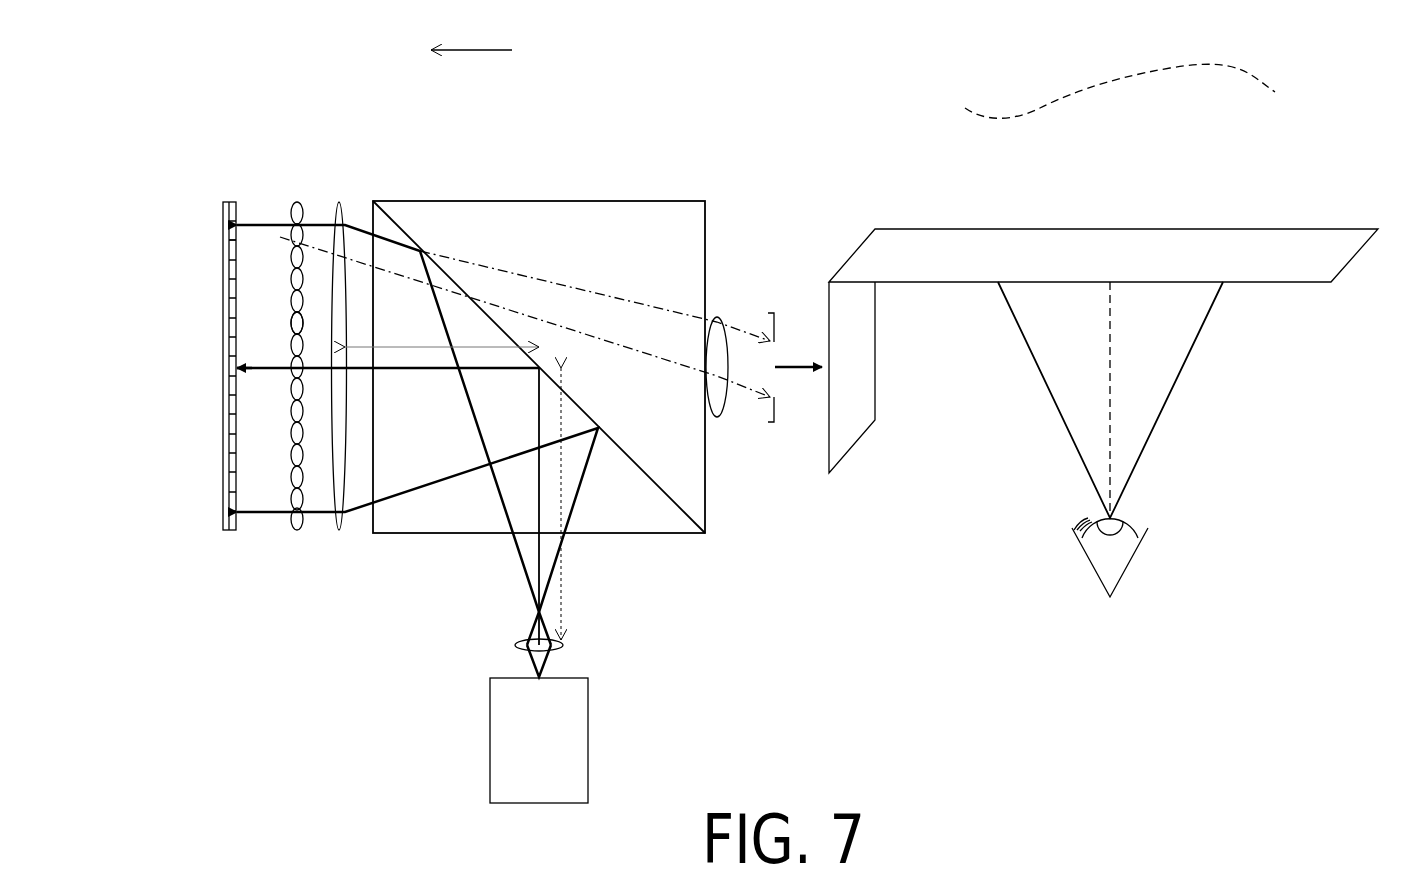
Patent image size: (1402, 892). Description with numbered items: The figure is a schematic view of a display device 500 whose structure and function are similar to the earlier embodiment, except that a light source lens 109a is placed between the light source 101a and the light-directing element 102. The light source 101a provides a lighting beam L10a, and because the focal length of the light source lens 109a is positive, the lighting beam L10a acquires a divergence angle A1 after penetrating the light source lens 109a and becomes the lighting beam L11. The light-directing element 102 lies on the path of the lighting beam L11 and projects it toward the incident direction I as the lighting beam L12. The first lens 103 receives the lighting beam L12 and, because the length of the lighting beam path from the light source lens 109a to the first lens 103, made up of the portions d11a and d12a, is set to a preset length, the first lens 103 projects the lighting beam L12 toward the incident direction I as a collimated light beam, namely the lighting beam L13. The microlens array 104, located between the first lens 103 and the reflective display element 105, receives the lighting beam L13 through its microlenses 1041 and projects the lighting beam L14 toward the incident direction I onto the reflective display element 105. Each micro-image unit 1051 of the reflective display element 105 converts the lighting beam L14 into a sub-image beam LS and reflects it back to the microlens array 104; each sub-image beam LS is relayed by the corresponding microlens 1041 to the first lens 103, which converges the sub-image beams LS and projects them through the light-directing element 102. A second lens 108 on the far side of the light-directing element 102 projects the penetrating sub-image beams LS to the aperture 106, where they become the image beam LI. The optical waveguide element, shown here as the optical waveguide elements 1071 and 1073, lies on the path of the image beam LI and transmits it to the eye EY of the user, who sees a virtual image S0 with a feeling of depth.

The incident direction I is at (471, 26).
The reflective display element 105 is at (221, 211).
The micro-image unit 1051 is at (230, 252).
The sub-image beam LS is at (268, 235).
The microlens array 104 is at (300, 200).
The microlens 1041 is at (293, 330).
The first lens 103 is at (340, 205).
The light-directing element 102 is at (655, 200).
The lighting beam L14 is at (268, 520).
The lighting beam L13 is at (318, 520).
The lighting beam L12 is at (378, 512).
The lighting beam L11 is at (520, 582).
The divergence angle A1 is at (525, 552).
The image beam LI is at (797, 358).
The length of lighting beam path d12a is at (466, 346).
The length of lighting beam path d11a is at (560, 548).
The light source lens 109a is at (565, 645).
The lighting beam L10a is at (548, 665).
The light source 101a is at (565, 750).
The second lens 108 is at (713, 320).
The aperture 106 is at (778, 417).
The optical waveguide element 1073 is at (931, 240).
The optical waveguide element 1071 is at (876, 382).
The virtual image S0 is at (950, 106).
The eye EY is at (1121, 562).
The display device 500 is at (1401, 763).